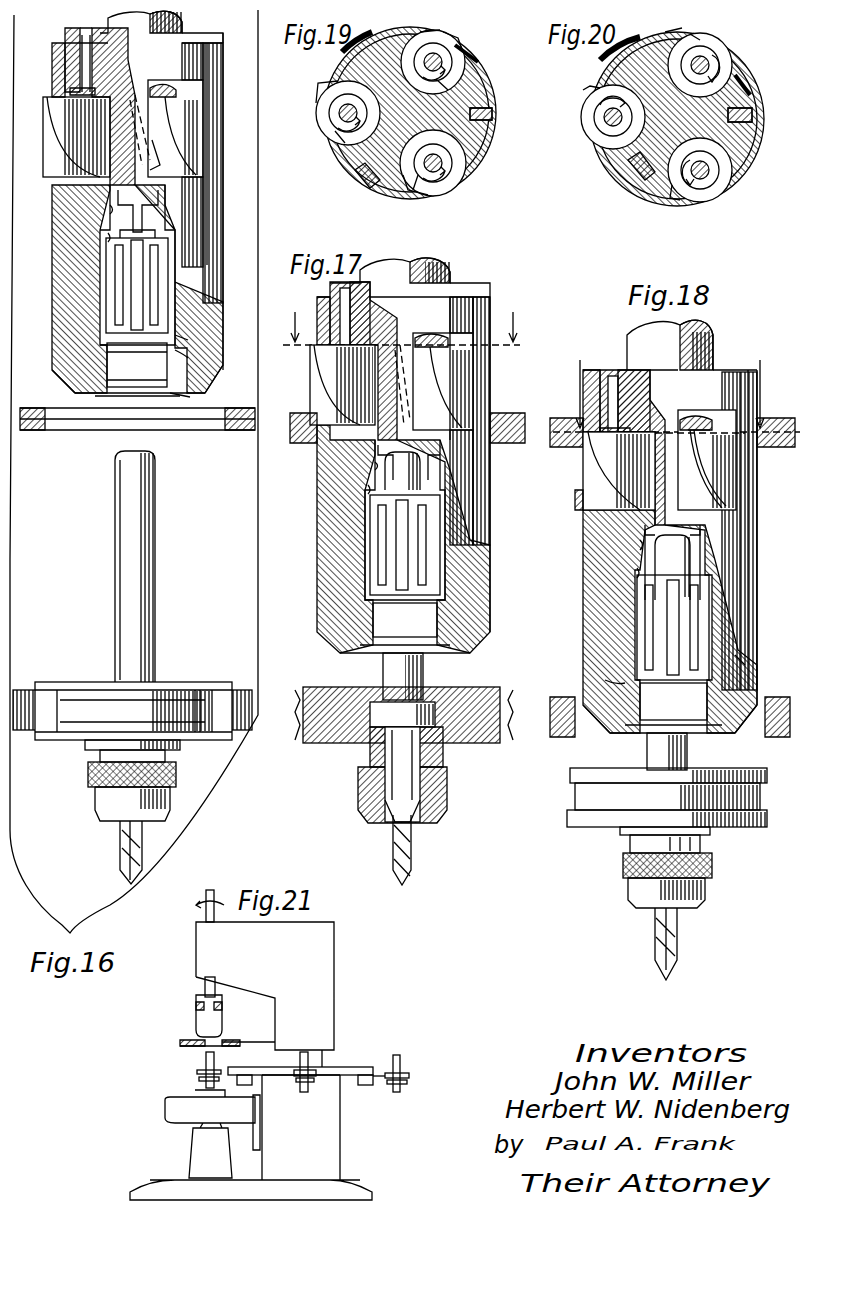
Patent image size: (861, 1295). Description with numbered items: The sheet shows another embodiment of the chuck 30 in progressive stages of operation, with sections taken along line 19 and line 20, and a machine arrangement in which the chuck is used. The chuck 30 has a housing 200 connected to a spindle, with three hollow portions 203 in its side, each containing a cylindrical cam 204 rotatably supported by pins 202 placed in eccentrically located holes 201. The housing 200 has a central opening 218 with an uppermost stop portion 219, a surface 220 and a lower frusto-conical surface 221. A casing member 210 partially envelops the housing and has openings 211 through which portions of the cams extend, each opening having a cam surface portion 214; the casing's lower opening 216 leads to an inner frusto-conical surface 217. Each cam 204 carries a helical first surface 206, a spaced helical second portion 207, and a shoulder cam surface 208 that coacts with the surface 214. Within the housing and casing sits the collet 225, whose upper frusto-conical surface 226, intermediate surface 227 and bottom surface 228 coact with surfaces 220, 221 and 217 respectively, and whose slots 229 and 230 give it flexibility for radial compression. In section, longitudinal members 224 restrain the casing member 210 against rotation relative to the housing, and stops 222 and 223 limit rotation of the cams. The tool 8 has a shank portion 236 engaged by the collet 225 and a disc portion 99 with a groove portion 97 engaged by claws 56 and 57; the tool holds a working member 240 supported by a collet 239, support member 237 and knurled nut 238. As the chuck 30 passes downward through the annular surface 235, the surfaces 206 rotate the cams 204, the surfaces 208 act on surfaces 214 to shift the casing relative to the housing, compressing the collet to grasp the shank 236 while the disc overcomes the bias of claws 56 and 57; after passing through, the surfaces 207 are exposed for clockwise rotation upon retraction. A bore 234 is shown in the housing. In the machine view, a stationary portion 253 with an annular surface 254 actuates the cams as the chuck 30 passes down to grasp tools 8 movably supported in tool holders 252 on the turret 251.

In FIG. 16, the tool 8 is at (155, 633).
In FIG. 17, the line 19— 19 is at (399, 327).
In FIG. 18, the line 20— 20 is at (676, 396).
In FIG. 16, the chuck 30 is at (68, 22).
In FIG. 17, the chuck 30 is at (311, 302).
In FIG. 18, the chuck 30 is at (604, 332).
In FIG. 21, the chuck 30 is at (218, 1017).
In FIG. 16, the claw 56 is at (20, 690).
In FIG. 16, the claw 57 is at (250, 690).
In FIG. 16, the groove portion 97 is at (60, 700).
In FIG. 17, the groove portion 97 is at (404, 715).
In FIG. 18, the groove portion 97 is at (610, 800).
In FIG. 16, the disc portion 99 is at (218, 690).
In FIG. 16, the housing 200 is at (185, 28).
In FIG. 17, the housing 200 is at (460, 292).
In FIG. 18, the housing 200 is at (725, 372).
In FIG. 19, the housing 200 is at (480, 95).
In FIG. 20, the housing 200 is at (620, 175).
In FIG. 16, the eccentrically located hole 201 is at (68, 36).
In FIG. 18, the eccentrically located hole 201 is at (610, 370).
In FIG. 19, the eccentrically located hole 201 is at (345, 137).
In FIG. 20, the eccentrically located hole 201 is at (605, 150).
In FIG. 16, the pin 202 is at (80, 63).
In FIG. 17, the pin 202 is at (363, 361).
In FIG. 18, the pin 202 is at (630, 372).
In FIG. 19, the pin 202 is at (340, 117).
In FIG. 20, the pin 202 is at (605, 117).
In FIG. 16, the hollow portion 203 is at (230, 97).
In FIG. 18, the hollow portion 203 is at (655, 428).
In FIG. 16, the cylindrical cam 204 is at (75, 143).
In FIG. 17, the cylindrical cam 204 is at (500, 383).
In FIG. 18, the cylindrical cam 204 is at (590, 460).
In FIG. 16, the first surface 206 is at (180, 118).
In FIG. 17, the first surface 206 is at (440, 360).
In FIG. 18, the first surface 206 is at (576, 505).
In FIG. 19, the first surface 206 is at (325, 90).
In FIG. 20, the first surface 206 is at (590, 95).
In FIG. 16, the second helical portion 207 is at (154, 165).
In FIG. 17, the second helical portion 207 is at (325, 385).
In FIG. 18, the second helical portion 207 is at (620, 478).
In FIG. 19, the second helical portion 207 is at (325, 106).
In FIG. 20, the second helical portion 207 is at (733, 55).
In FIG. 16, the third cam surface 208 is at (156, 88).
In FIG. 17, the third cam surface 208 is at (432, 342).
In FIG. 18, the third cam surface 208 is at (712, 425).
In FIG. 16, the casing member 210 is at (207, 240).
In FIG. 17, the casing member 210 is at (482, 498).
In FIG. 18, the casing member 210 is at (670, 551).
In FIG. 19, the casing member 210 is at (494, 133).
In FIG. 20, the casing member 210 is at (640, 200).
In FIG. 16, the opening 211 is at (203, 153).
In FIG. 19, the opening 211 is at (485, 72).
In FIG. 20, the opening 211 is at (745, 75).
In FIG. 16, the cam surface portion 214 is at (178, 86).
In FIG. 17, the cam surface portion 214 is at (450, 345).
In FIG. 18, the cam surface portion 214 is at (710, 420).
In FIG. 16, the opening 216 is at (190, 395).
In FIG. 16, the inner frusto-conical surface 217 is at (60, 382).
In FIG. 18, the inner frusto-conical surface 217 is at (745, 735).
In FIG. 16, the central opening 218 is at (110, 210).
In FIG. 17, the central opening 218 is at (372, 458).
In FIG. 18, the central opening 218 is at (640, 542).
In FIG. 16, the stop portion 219 is at (138, 211).
In FIG. 17, the stop portion 219 is at (420, 452).
In FIG. 18, the stop portion 219 is at (700, 530).
In FIG. 16, the surface 220 is at (105, 238).
In FIG. 17, the surface 220 is at (365, 480).
In FIG. 18, the surface 220 is at (635, 572).
In FIG. 16, the frusto-conical surface 221 is at (180, 338).
In FIG. 18, the frusto-conical surface 221 is at (740, 663).
In FIG. 19, the stop 222 is at (470, 52).
In FIG. 20, the stop 222 is at (745, 88).
In FIG. 19, the stop 223 is at (432, 30).
In FIG. 20, the stop 223 is at (684, 34).
In FIG. 19, the longitudinal member 224 is at (494, 114).
In FIG. 20, the longitudinal member 224 is at (754, 116).
In FIG. 16, the collet 225 is at (142, 372).
In FIG. 17, the collet 225 is at (409, 630).
In FIG. 18, the collet 225 is at (672, 708).
In FIG. 16, the upper frusto-conical surface 226 is at (110, 250).
In FIG. 17, the upper frusto-conical surface 226 is at (372, 495).
In FIG. 18, the upper frusto-conical surface 226 is at (640, 596).
In FIG. 16, the intermediate frusto-conical surface 227 is at (185, 352).
In FIG. 18, the intermediate frusto-conical surface 227 is at (602, 680).
In FIG. 16, the bottom frusto-conical surface 228 is at (95, 393).
In FIG. 16, the slot 229 is at (133, 285).
In FIG. 17, the slot 229 is at (400, 520).
In FIG. 18, the slot 229 is at (668, 626).
In FIG. 16, the slot 230 is at (115, 305).
In FIG. 17, the slot 230 is at (385, 545).
In FIG. 18, the slot 230 is at (650, 650).
In FIG. 18, the bore 234 is at (672, 565).
In FIG. 16, the annular surface 235 is at (188, 432).
In FIG. 17, the annular surface 235 is at (497, 425).
In FIG. 18, the annular surface 235 is at (772, 425).
In FIG. 16, the shank portion 236 is at (152, 545).
In FIG. 17, the shank portion 236 is at (405, 472).
In FIG. 16, the support member 237 is at (105, 755).
In FIG. 17, the support member 237 is at (370, 757).
In FIG. 18, the support member 237 is at (640, 841).
In FIG. 16, the knurled nut 238 is at (178, 772).
In FIG. 17, the knurled nut 238 is at (448, 785).
In FIG. 18, the knurled nut 238 is at (626, 866).
In FIG. 17, the collet 239 is at (405, 818).
In FIG. 16, the working member 240 is at (122, 845).
In FIG. 17, the working member 240 is at (408, 862).
In FIG. 18, the working member 240 is at (660, 945).
In FIG. 21, the turret 251 is at (355, 1068).
In FIG. 21, the tool holder 252 is at (401, 1076).
In FIG. 21, the portion 253 is at (180, 1043).
In FIG. 21, the annular surface 254 is at (196, 1050).